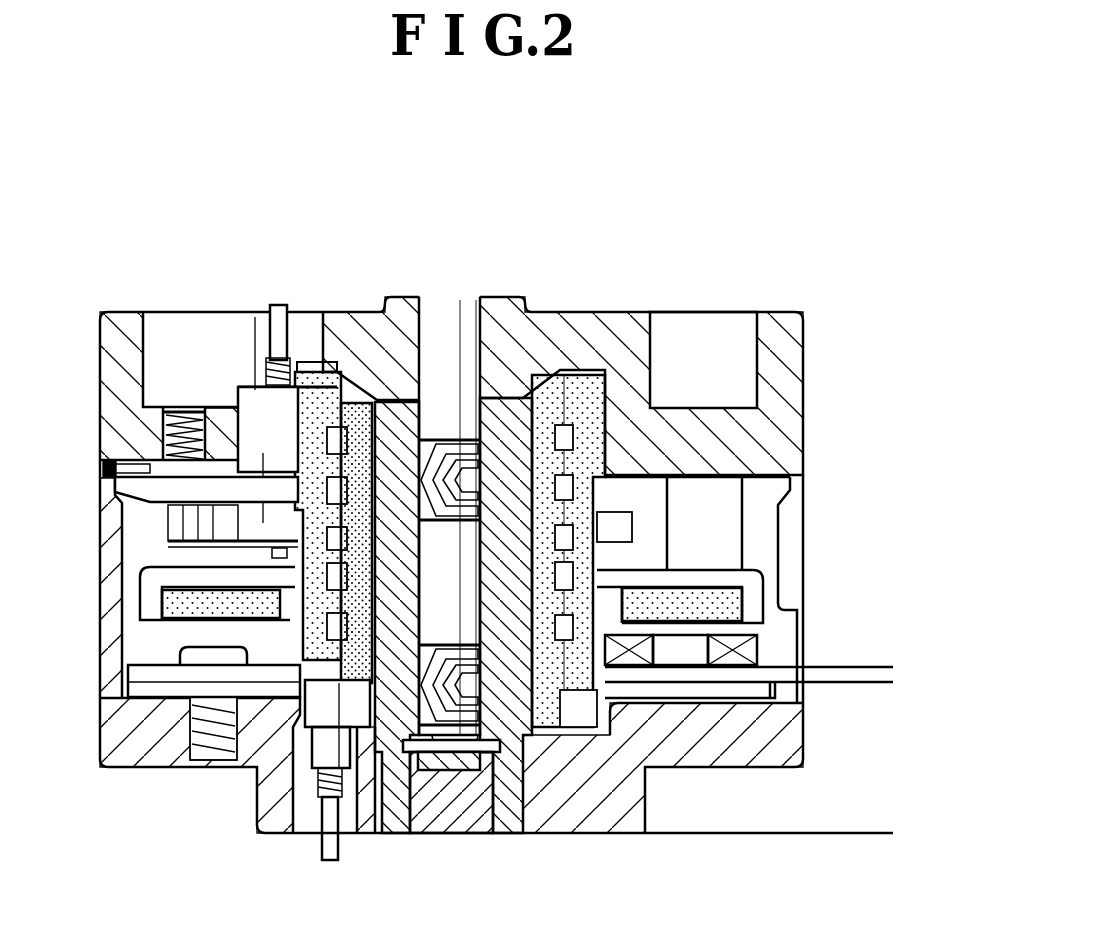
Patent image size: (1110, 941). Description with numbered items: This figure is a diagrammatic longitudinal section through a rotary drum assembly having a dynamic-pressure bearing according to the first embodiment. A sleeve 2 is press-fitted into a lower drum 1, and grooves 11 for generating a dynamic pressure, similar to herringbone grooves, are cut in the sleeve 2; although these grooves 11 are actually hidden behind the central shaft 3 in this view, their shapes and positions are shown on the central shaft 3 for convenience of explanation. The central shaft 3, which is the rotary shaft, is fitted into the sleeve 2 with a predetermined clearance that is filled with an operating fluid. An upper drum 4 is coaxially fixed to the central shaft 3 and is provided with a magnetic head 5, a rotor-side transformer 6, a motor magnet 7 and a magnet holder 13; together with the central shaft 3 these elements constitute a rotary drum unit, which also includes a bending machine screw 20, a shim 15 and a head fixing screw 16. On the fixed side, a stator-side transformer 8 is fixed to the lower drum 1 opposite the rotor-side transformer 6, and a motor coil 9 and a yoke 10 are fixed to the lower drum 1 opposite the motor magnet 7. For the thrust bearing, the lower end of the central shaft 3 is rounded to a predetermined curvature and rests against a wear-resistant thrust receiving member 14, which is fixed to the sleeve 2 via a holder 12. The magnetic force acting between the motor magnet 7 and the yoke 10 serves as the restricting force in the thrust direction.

The lower drum 1 is at (770, 750).
The sleeve 2 is at (512, 688).
The central shaft 3 is at (450, 328).
The upper drum 4 is at (712, 443).
The magnetic head 5 is at (163, 460).
The rotor-side transformer 6 is at (312, 400).
The motor magnet 7 is at (200, 603).
The stator-side transformer 8 is at (353, 650).
The motor coil 9 is at (748, 650).
The yoke 10 is at (752, 690).
The grooves 11 is at (437, 440).
The holder 12 is at (470, 797).
The magnet holder 13 is at (215, 568).
The thrust receiving member 14 is at (455, 800).
The shim 15 is at (235, 462).
The head fixing screw 16 is at (178, 483).
The bending machine screw 20 is at (182, 460).